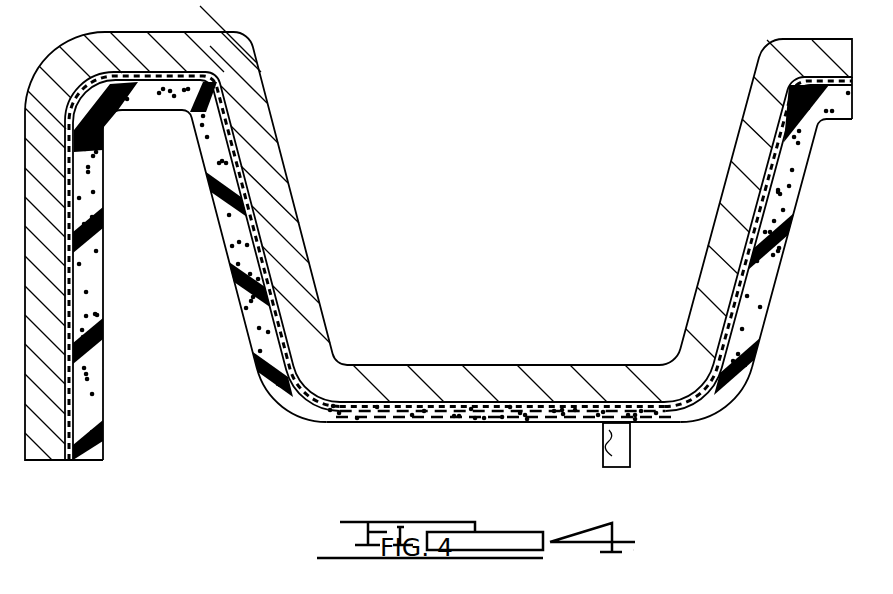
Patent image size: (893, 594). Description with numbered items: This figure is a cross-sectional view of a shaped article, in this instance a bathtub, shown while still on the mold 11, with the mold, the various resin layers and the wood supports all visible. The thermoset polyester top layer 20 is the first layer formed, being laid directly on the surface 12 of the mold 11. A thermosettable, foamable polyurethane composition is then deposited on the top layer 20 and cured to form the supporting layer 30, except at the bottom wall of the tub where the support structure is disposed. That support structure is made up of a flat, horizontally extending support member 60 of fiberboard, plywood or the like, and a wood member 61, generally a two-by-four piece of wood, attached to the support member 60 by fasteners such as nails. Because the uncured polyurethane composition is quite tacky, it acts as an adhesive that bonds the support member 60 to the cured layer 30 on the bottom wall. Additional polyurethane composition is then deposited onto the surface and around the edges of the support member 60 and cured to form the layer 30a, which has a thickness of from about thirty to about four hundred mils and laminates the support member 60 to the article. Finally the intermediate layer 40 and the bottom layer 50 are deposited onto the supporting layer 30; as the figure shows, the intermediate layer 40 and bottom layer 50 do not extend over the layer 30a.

The mold 11 is at (263, 131).
The surface of mold 12 is at (240, 207).
The thermoset polyester top layer 20 is at (282, 292).
The supporting layer 30 is at (722, 325).
The cured layer around support member 30a is at (682, 424).
The intermediate layer 40 is at (767, 267).
The bottom layer 50 is at (760, 335).
The support member 60 is at (388, 424).
The wood member 61 is at (604, 457).